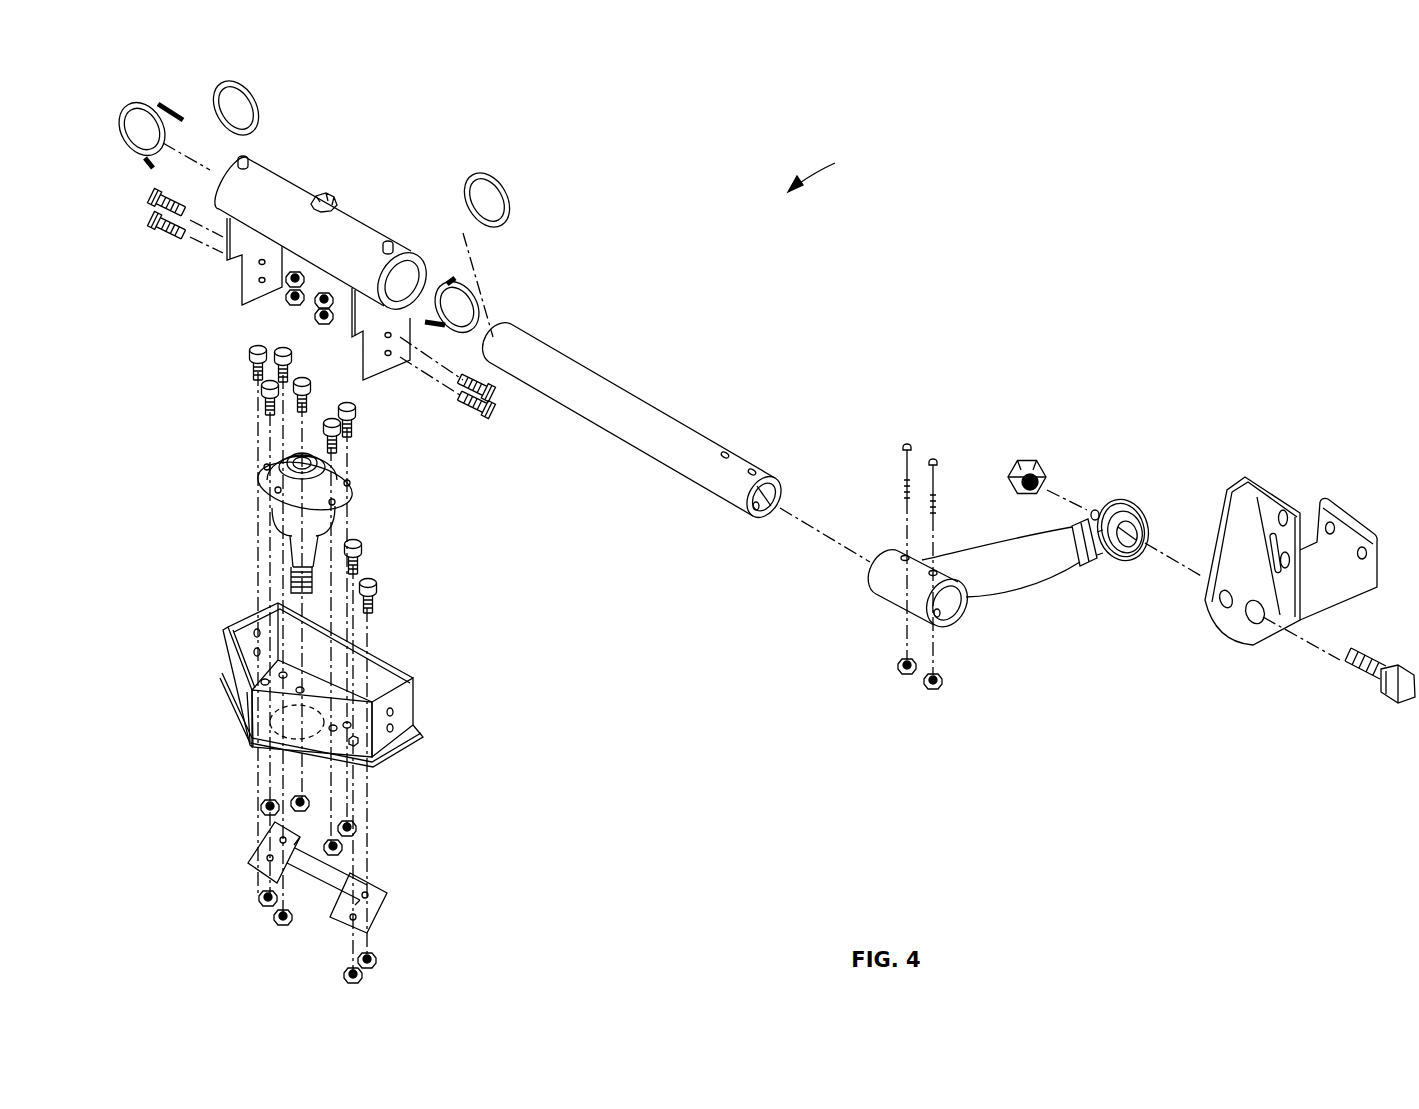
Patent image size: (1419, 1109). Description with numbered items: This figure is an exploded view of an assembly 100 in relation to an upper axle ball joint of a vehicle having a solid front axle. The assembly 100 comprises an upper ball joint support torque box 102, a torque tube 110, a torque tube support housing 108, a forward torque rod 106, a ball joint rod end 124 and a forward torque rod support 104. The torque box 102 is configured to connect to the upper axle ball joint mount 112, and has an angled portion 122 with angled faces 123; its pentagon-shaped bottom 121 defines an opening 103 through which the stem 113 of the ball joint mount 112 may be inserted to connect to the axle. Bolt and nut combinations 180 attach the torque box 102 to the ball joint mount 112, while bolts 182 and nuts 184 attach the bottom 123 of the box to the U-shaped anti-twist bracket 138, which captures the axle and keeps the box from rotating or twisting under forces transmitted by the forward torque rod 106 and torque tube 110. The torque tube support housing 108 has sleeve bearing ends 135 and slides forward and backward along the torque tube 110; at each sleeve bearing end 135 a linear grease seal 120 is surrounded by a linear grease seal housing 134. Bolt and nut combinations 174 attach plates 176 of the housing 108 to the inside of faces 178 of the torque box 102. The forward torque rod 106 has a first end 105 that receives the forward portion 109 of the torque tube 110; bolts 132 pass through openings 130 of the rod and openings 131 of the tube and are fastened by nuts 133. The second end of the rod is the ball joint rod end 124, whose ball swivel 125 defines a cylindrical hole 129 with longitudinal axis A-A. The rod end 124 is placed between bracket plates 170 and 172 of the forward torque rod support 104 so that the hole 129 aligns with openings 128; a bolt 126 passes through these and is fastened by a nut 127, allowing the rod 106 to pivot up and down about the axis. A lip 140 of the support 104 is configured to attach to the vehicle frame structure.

The assembly 100 is at (838, 173).
The upper ball joint support torque box 102 is at (318, 708).
The opening 103 is at (295, 727).
The forward torque rod support 104 is at (1282, 539).
The first end 105 is at (890, 603).
The forward torque rod 106 is at (1003, 600).
The torque tube support housing 108 is at (340, 218).
The forward portion 109 is at (722, 505).
The torque tube 110 is at (630, 390).
The upper axle ball joint mount 112 is at (350, 495).
The stem 113 is at (293, 575).
The linear grease seal 120 is at (508, 208).
The bottom 121 is at (403, 752).
The angled portion 122 is at (240, 693).
The angled faces 123 is at (278, 743).
The ball joint rod end 124 is at (1115, 502).
The ball swivel 125 is at (1127, 557).
The bolt 126 is at (1385, 697).
The nut 127 is at (1030, 458).
The openings 128 is at (1253, 624).
The cylindrical hole 129 is at (1145, 530).
The openings 130 is at (940, 617).
The openings 131 is at (760, 515).
The bolts 132 is at (935, 458).
The nuts 133 is at (936, 688).
The linear grease seal housing 134 is at (476, 292).
The sleeve bearing ends 135 is at (408, 246).
The anti-twist bracket 138 is at (382, 850).
The lip 140 is at (1333, 508).
The bracket plate 170 is at (1279, 545).
The bracket plate 172 is at (1250, 488).
The bolt and nut combinations 174 is at (290, 293).
The plates 176 is at (386, 365).
The faces 178 is at (375, 745).
The bolt and nut combinations 180 is at (265, 812).
The bolts 182 is at (372, 588).
The nuts 184 is at (372, 958).